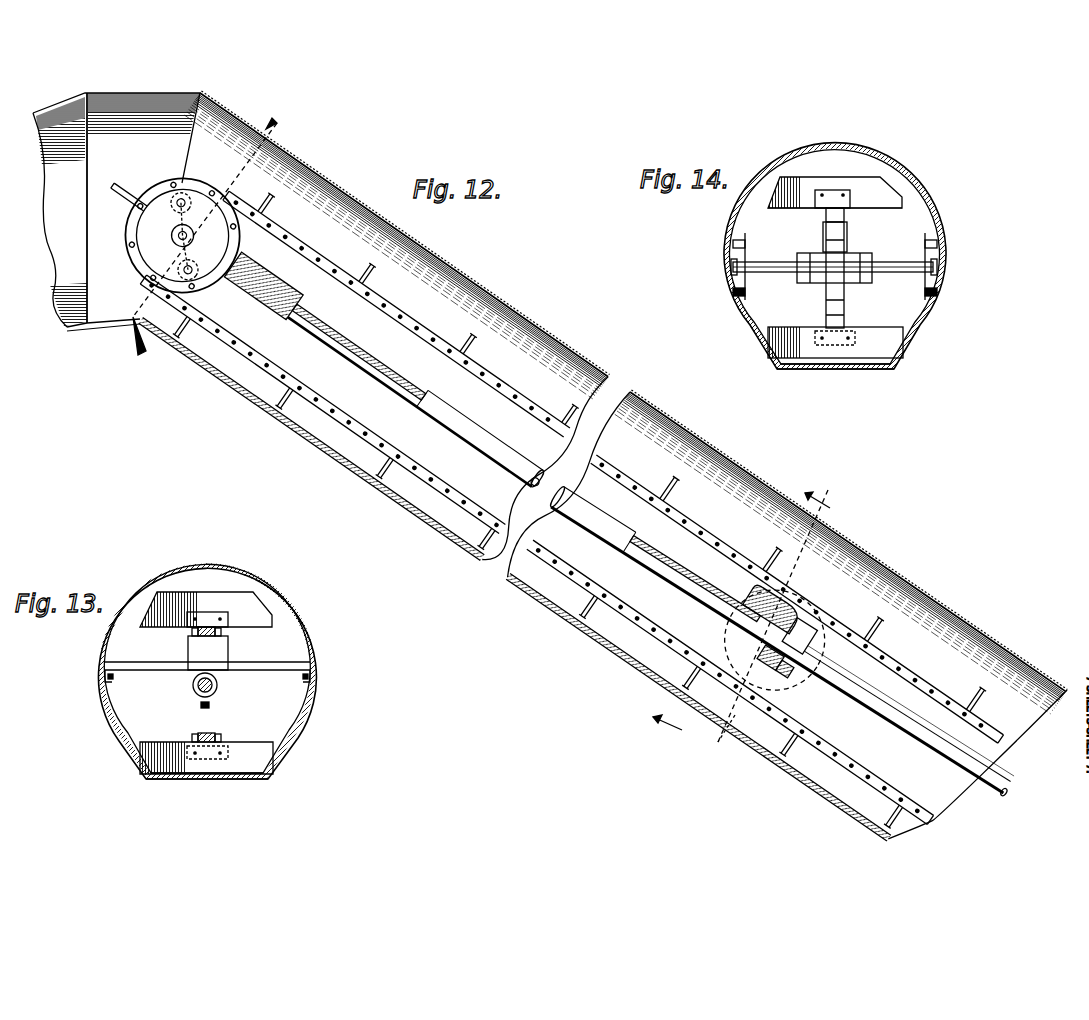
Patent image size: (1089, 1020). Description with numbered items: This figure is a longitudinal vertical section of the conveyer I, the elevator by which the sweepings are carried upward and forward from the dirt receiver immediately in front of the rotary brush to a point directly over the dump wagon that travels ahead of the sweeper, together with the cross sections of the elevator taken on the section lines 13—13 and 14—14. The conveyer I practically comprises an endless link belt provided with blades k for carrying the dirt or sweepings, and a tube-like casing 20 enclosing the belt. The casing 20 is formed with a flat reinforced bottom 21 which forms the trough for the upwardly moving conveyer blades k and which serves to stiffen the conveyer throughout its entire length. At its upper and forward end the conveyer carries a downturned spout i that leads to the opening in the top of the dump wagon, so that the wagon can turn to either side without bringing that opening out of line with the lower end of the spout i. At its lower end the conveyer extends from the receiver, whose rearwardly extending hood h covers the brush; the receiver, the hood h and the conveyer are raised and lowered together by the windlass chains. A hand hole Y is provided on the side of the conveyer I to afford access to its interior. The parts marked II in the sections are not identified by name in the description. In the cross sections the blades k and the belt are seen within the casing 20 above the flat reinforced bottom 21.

In FIG. 12, the tube-like casing 20 is at (560, 357).
In FIG. 13, the tube-like casing 20 is at (170, 573).
In FIG. 14, the tube-like casing 20 is at (868, 153).
In FIG. 12, the flat reinforced bottom 21 is at (556, 612).
In FIG. 13, the flat reinforced bottom 21 is at (238, 785).
In FIG. 14, the flat reinforced bottom 21 is at (862, 369).
In FIG. 12, the downturned spout i is at (62, 330).
In FIG. 12, the rearwardly extending hood h is at (183, 330).
In FIG. 14, the rearwardly extending hood h is at (950, 178).
In FIG. 12, the blades k is at (990, 680).
In FIG. 13, the blades k is at (271, 607).
In FIG. 14, the blades k is at (797, 352).
In FIG. 12, the bearing nut II is at (640, 462).
In FIG. 13, the bearing nut II is at (222, 630).
In FIG. 14, the bearing nut II is at (846, 303).
In FIG. 13, the conveyer I is at (316, 666).
In FIG. 14, the conveyer I is at (725, 306).
In FIG. 12, the hand hole Y is at (722, 735).
In FIG. 12, the cross-section line 13 is at (746, 614).
In FIG. 12, the transverse-section line 14 is at (210, 235).